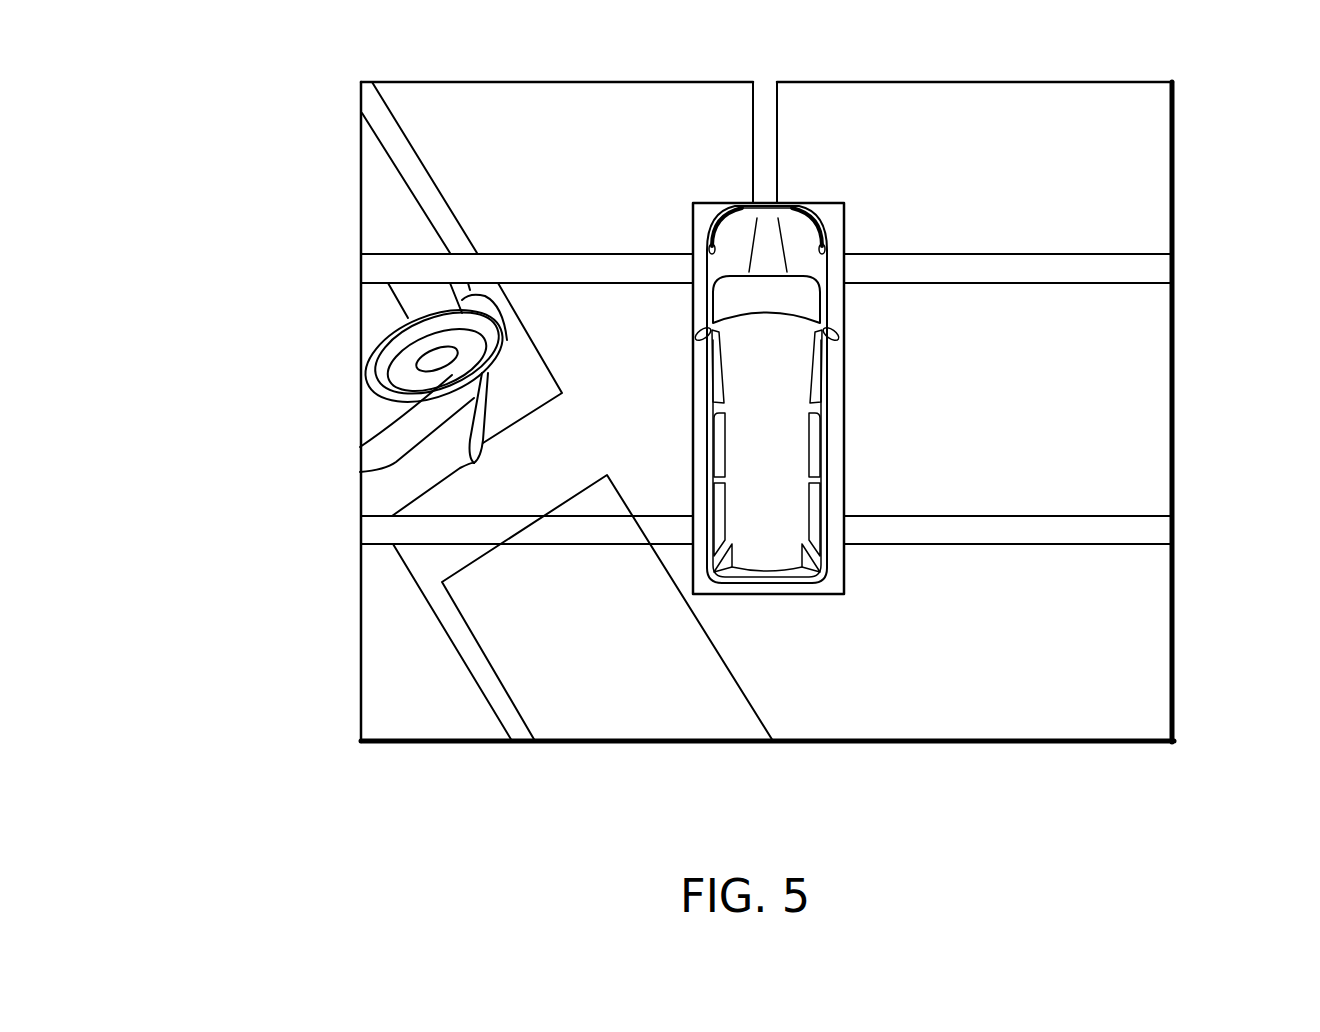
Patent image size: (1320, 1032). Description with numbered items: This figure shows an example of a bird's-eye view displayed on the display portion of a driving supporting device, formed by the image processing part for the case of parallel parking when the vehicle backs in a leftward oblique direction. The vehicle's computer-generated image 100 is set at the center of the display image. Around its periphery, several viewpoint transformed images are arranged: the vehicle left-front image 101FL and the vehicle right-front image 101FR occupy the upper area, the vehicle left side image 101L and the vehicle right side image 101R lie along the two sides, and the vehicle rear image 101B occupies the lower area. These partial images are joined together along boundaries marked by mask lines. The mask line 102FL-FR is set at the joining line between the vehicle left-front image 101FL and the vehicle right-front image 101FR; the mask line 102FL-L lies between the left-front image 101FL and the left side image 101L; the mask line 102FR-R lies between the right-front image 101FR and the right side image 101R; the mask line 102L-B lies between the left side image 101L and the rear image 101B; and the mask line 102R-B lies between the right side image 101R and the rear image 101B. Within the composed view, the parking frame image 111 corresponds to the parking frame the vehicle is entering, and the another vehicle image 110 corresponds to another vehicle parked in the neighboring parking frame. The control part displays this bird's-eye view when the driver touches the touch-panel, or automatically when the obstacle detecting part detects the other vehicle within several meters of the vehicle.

The vehicle's computer-generated image 100 is at (830, 444).
The another vehicle image 110 is at (372, 207).
The parking frame image 111 is at (727, 664).
The vehicle left-front image 101FL is at (614, 93).
The vehicle right-front image 101FR is at (998, 93).
The vehicle right side image 101R is at (1157, 380).
The vehicle left side image 101L is at (453, 492).
The vehicle rear image 101B is at (937, 727).
The mask line 102FL-FR is at (766, 93).
The mask line 102FL-L is at (372, 268).
The mask line 102FR-R is at (1160, 271).
The mask line 102L-B is at (372, 527).
The mask line 102R-B is at (1158, 533).